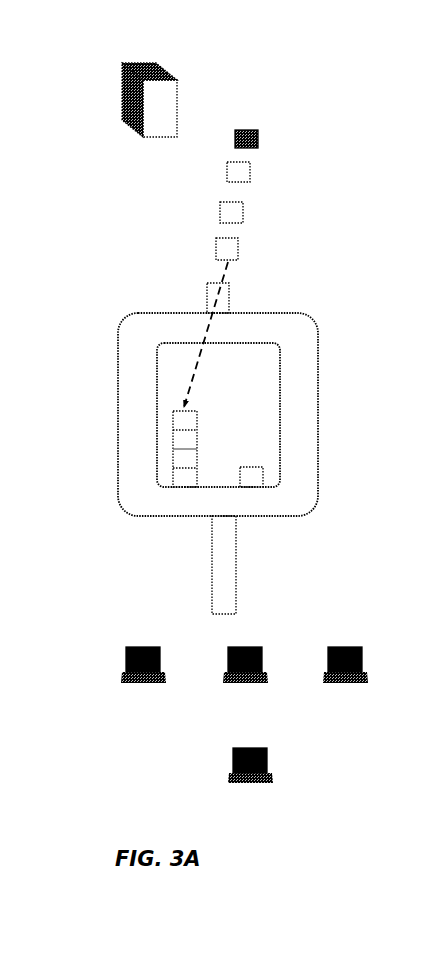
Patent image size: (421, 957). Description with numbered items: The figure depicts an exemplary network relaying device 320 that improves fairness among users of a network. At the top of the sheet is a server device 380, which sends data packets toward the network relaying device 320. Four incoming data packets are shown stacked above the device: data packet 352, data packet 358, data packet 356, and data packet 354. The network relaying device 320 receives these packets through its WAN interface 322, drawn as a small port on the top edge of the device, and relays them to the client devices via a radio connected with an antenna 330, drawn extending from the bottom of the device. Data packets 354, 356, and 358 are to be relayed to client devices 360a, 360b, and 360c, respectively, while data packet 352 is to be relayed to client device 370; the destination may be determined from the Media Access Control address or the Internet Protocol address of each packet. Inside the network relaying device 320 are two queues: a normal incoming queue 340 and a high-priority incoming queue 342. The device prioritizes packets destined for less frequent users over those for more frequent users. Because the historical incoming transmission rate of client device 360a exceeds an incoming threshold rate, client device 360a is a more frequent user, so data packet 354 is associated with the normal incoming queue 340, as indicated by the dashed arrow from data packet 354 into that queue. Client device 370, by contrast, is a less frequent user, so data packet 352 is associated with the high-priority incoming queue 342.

The server device 380 is at (112, 92).
The data packet 352 is at (259, 142).
The data packet 358 is at (251, 171).
The data packet 356 is at (244, 212).
The data packet 354 is at (239, 248).
The network relaying device 320 is at (117, 333).
The WAN interface 322 is at (206, 300).
The antenna 330 is at (211, 600).
The normal incoming queue 340 is at (172, 416).
The high-priority incoming queue 342 is at (265, 475).
The client device 360a is at (143, 685).
The client device 360b is at (244, 685).
The client device 360c is at (346, 685).
The client device 370 is at (249, 786).